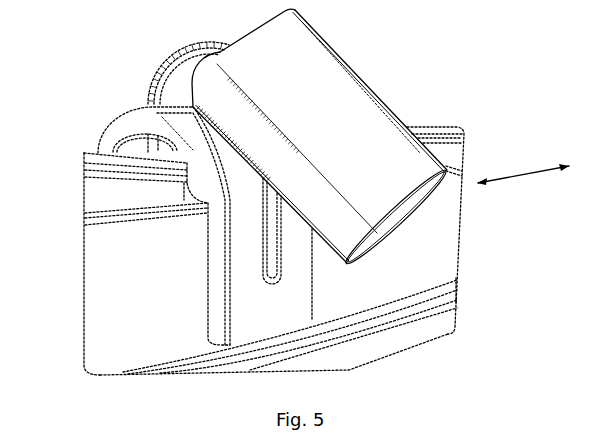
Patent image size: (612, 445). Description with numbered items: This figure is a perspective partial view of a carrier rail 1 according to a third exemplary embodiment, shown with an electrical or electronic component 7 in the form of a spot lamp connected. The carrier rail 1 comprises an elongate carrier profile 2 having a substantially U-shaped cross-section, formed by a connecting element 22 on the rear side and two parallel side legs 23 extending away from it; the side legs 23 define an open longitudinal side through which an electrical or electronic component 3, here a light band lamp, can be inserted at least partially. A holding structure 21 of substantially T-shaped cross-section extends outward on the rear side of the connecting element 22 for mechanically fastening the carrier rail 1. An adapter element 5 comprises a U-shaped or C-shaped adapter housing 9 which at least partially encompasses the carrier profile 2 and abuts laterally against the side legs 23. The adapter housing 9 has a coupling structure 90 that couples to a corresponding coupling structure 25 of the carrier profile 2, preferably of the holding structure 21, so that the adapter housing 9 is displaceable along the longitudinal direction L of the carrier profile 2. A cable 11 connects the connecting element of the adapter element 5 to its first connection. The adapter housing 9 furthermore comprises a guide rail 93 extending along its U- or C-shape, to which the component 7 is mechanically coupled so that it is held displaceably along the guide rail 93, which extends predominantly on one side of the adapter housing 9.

The carrier rail 1 is at (459, 88).
The carrier profile 2 is at (98, 290).
The electrical or electronic component 3 is at (426, 332).
The adapter element 5 is at (207, 285).
The electrical or electronic component 7 is at (419, 206).
The adapter housing 9 is at (311, 311).
The cable 11 is at (172, 64).
The holding structure 21 is at (436, 125).
The connecting element 22 is at (84, 227).
The side legs 23 is at (454, 278).
The coupling structure 25 is at (99, 186).
The coupling structure 90 is at (190, 212).
The guide rail 93 is at (280, 241).
The longitudinal direction L is at (528, 168).